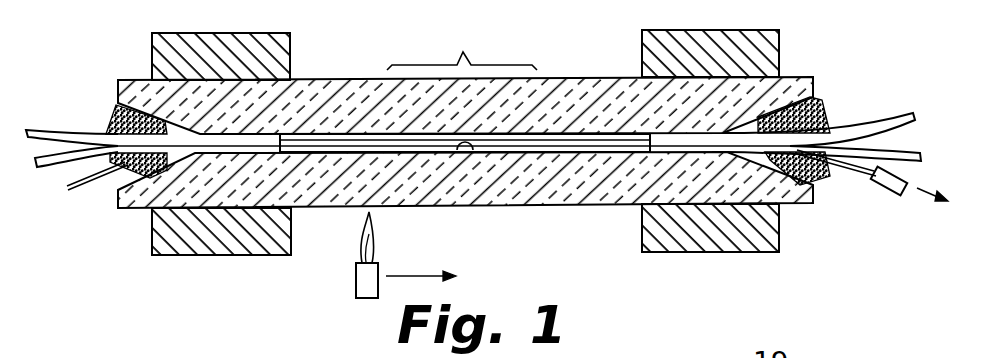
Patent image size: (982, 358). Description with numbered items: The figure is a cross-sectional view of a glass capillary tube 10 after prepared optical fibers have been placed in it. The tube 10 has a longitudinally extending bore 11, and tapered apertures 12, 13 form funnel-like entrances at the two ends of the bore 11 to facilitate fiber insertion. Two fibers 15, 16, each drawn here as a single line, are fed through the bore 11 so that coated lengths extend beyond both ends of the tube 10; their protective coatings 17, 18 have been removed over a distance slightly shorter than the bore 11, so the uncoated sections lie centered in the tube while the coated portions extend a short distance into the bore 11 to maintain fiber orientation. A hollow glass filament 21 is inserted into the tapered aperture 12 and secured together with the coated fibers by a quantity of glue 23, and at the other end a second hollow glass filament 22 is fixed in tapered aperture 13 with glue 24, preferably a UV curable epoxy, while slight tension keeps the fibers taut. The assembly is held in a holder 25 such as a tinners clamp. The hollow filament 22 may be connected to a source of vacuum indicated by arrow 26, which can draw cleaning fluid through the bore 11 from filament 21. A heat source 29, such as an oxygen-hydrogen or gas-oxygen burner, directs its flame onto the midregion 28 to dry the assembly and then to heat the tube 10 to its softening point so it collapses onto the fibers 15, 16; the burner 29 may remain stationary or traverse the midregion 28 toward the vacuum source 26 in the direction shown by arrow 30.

The glass capillary tube 10 is at (591, 70).
The bore 11 is at (461, 146).
The tapered aperture 12 is at (110, 118).
The tapered aperture 13 is at (826, 106).
The fiber 15 is at (505, 133).
The fiber 16 is at (557, 151).
The protective coating 17 is at (43, 128).
The protective coating 18 is at (38, 176).
The hollow glass filament 21 is at (74, 188).
The hollow glass filament 22 is at (860, 176).
The glue 23 is at (117, 190).
The glue 24 is at (822, 173).
The holder 25 is at (229, 33).
The vacuum source arrow 26 is at (917, 190).
The midregion 28 is at (462, 43).
The heat source 29 is at (356, 281).
The arrow 30 is at (415, 276).